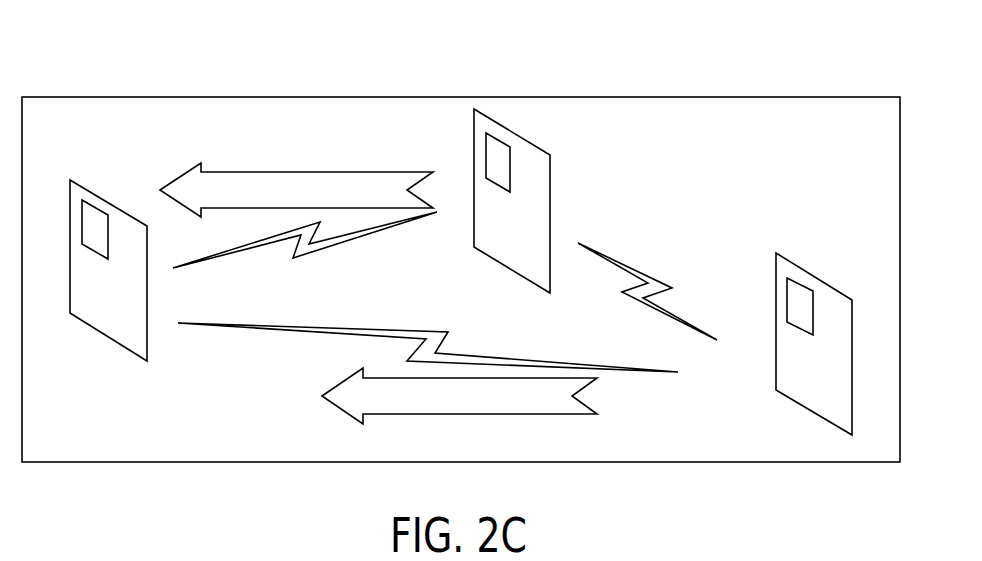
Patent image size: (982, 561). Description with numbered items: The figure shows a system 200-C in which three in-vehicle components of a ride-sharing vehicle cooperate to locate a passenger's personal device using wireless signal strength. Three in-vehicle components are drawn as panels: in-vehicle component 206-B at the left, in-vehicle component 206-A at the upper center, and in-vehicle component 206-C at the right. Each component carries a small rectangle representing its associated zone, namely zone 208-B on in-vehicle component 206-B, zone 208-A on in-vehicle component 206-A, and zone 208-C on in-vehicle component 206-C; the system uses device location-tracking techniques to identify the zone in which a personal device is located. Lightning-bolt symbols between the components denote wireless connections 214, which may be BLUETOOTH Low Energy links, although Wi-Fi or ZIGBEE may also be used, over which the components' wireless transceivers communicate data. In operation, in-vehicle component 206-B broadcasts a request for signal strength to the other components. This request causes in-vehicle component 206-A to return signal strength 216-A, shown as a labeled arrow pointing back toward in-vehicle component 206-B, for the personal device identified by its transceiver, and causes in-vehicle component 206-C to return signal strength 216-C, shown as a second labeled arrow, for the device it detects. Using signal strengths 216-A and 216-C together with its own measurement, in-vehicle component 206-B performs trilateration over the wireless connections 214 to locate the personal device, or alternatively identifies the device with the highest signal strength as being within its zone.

The system 200-C is at (147, 70).
The in-vehicle component 206-A is at (474, 131).
The in-vehicle component 206-B is at (71, 180).
The in-vehicle component 206-C is at (776, 265).
The zone 208-A is at (486, 160).
The zone 208-B is at (100, 211).
The zone 208-C is at (787, 302).
The wireless connection 214 is at (348, 242).
The signal strength 216-A is at (227, 172).
The signal strength 216-C is at (335, 404).